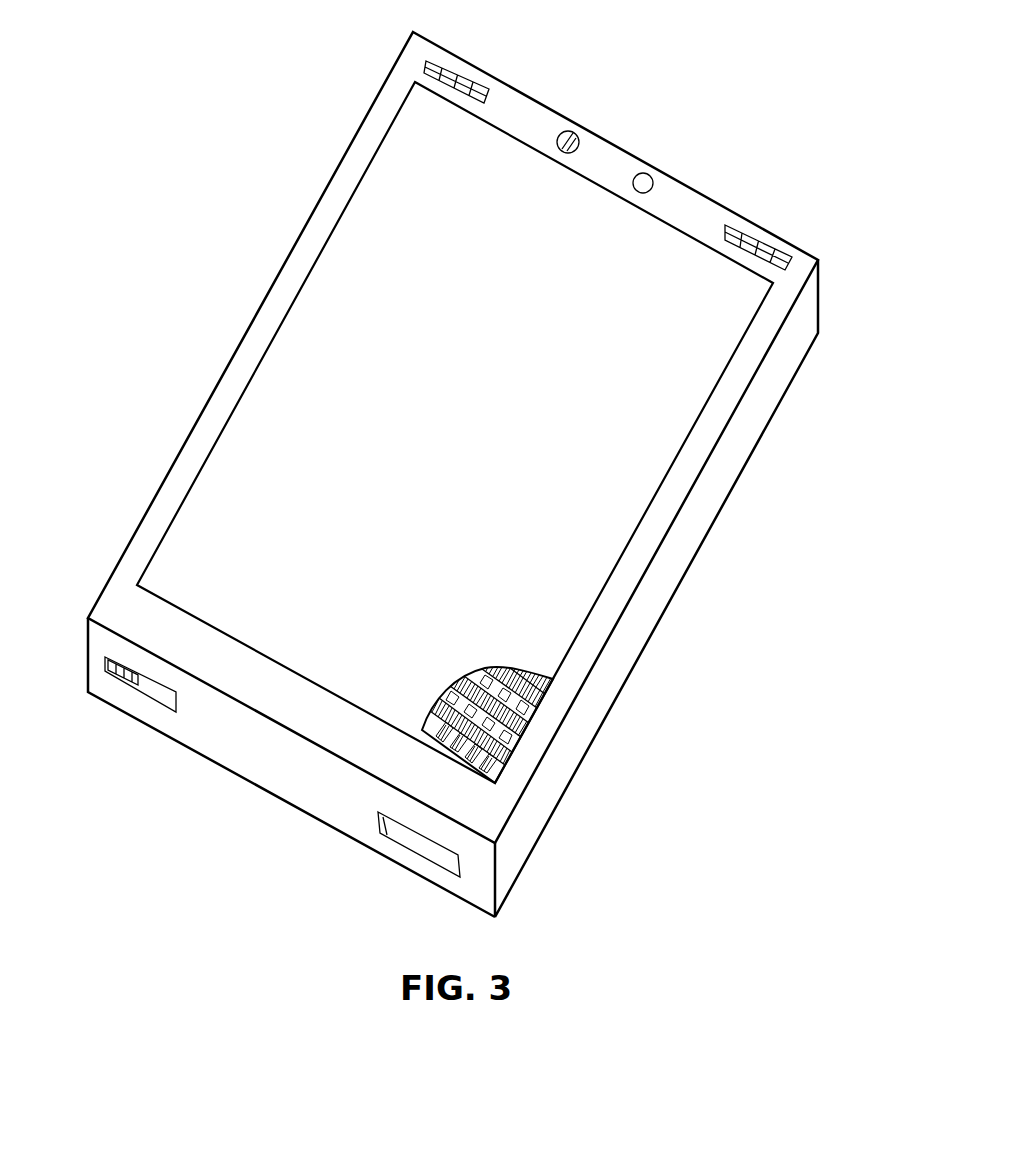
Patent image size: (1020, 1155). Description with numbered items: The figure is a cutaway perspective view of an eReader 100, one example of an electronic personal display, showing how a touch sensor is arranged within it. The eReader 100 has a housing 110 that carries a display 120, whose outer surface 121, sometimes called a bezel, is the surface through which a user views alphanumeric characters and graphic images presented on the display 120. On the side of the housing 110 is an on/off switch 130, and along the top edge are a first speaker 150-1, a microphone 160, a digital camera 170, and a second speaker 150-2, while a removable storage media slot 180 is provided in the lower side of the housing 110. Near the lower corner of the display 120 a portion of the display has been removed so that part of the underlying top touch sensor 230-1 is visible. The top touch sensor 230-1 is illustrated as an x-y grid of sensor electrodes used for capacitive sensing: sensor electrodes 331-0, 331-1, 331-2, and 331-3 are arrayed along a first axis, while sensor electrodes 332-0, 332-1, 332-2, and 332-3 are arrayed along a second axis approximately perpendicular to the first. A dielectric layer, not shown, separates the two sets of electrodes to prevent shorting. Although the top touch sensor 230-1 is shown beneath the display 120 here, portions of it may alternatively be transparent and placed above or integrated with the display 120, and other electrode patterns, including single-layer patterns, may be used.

The eReader 100 is at (172, 234).
The housing 110 is at (822, 307).
The display 120 is at (413, 80).
The outer surface 121 is at (635, 505).
The on/off switch 130 is at (107, 677).
The speaker 150-1 is at (443, 75).
The speaker 150-2 is at (757, 243).
The microphone 160 is at (573, 130).
The digital camera 170 is at (645, 176).
The removable storage media slot 180 is at (408, 836).
The top touch sensor 230-1 is at (528, 663).
The sensor electrode 331-0 is at (480, 778).
The sensor electrode 331-1 is at (465, 766).
The sensor electrode 331-2 is at (447, 750).
The sensor electrode 331-3 is at (418, 732).
The sensor electrode 332-0 is at (507, 765).
The sensor electrode 332-1 is at (520, 740).
The sensor electrode 332-2 is at (535, 718).
The sensor electrode 332-3 is at (547, 694).